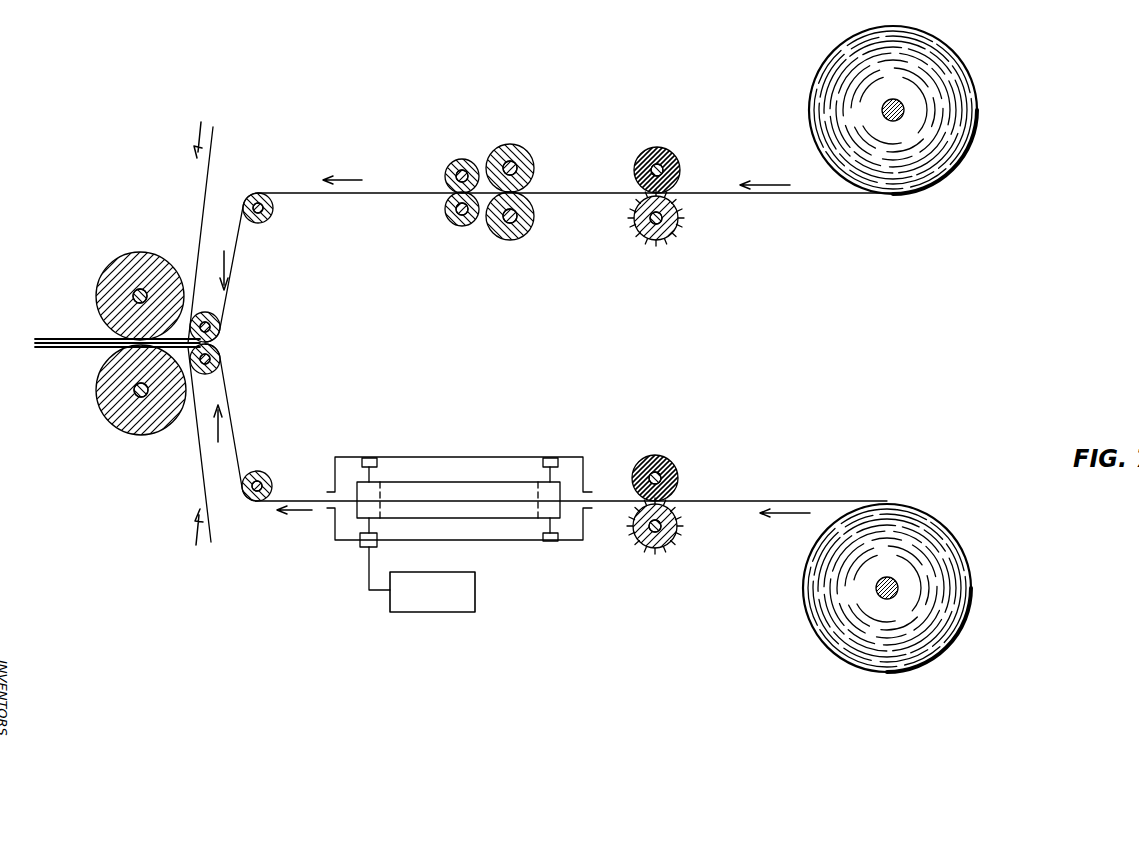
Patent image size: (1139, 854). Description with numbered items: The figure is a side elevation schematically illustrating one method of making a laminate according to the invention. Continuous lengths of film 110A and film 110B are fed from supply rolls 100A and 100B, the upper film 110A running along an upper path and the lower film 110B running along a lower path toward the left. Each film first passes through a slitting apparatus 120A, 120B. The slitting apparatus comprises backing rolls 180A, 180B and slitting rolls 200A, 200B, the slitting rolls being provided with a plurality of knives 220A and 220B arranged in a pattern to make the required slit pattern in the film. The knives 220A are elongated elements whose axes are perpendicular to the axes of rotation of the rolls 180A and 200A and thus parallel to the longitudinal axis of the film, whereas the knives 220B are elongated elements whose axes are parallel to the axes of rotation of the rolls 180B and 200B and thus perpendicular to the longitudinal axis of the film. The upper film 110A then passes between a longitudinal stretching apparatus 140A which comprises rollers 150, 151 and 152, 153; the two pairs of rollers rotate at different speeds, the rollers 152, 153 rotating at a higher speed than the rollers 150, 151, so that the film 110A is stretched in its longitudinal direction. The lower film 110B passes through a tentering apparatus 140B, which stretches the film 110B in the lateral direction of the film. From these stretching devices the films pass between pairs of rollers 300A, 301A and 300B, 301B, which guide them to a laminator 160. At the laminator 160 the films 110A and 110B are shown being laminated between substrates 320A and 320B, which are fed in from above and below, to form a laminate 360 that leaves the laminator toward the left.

The supply roll 100A is at (950, 63).
The film 110A is at (789, 194).
The slitting apparatus 120A is at (697, 186).
The longitudinal stretching apparatus 140A is at (500, 171).
The roller 150 is at (515, 151).
The roller 151 is at (522, 227).
The roller 152 is at (450, 161).
The roller 153 is at (463, 221).
The laminator 160 is at (180, 251).
The backing roll 180A is at (650, 147).
The slitting roll 200A is at (697, 235).
The knives 220A is at (680, 228).
The roller 300A is at (273, 211).
The roller 301A is at (222, 324).
The roller 301B is at (222, 356).
The substrate 320A is at (208, 160).
The substrate 320B is at (198, 482).
The laminate 360 is at (80, 333).
The roller 300B is at (263, 471).
The tentering apparatus 140B is at (512, 528).
The backing roll 180B is at (660, 457).
The slitting apparatus 120B is at (695, 506).
The knives 220B is at (679, 528).
The slitting roll 200B is at (695, 549).
The film 110B is at (797, 501).
The supply roll 100B is at (955, 578).